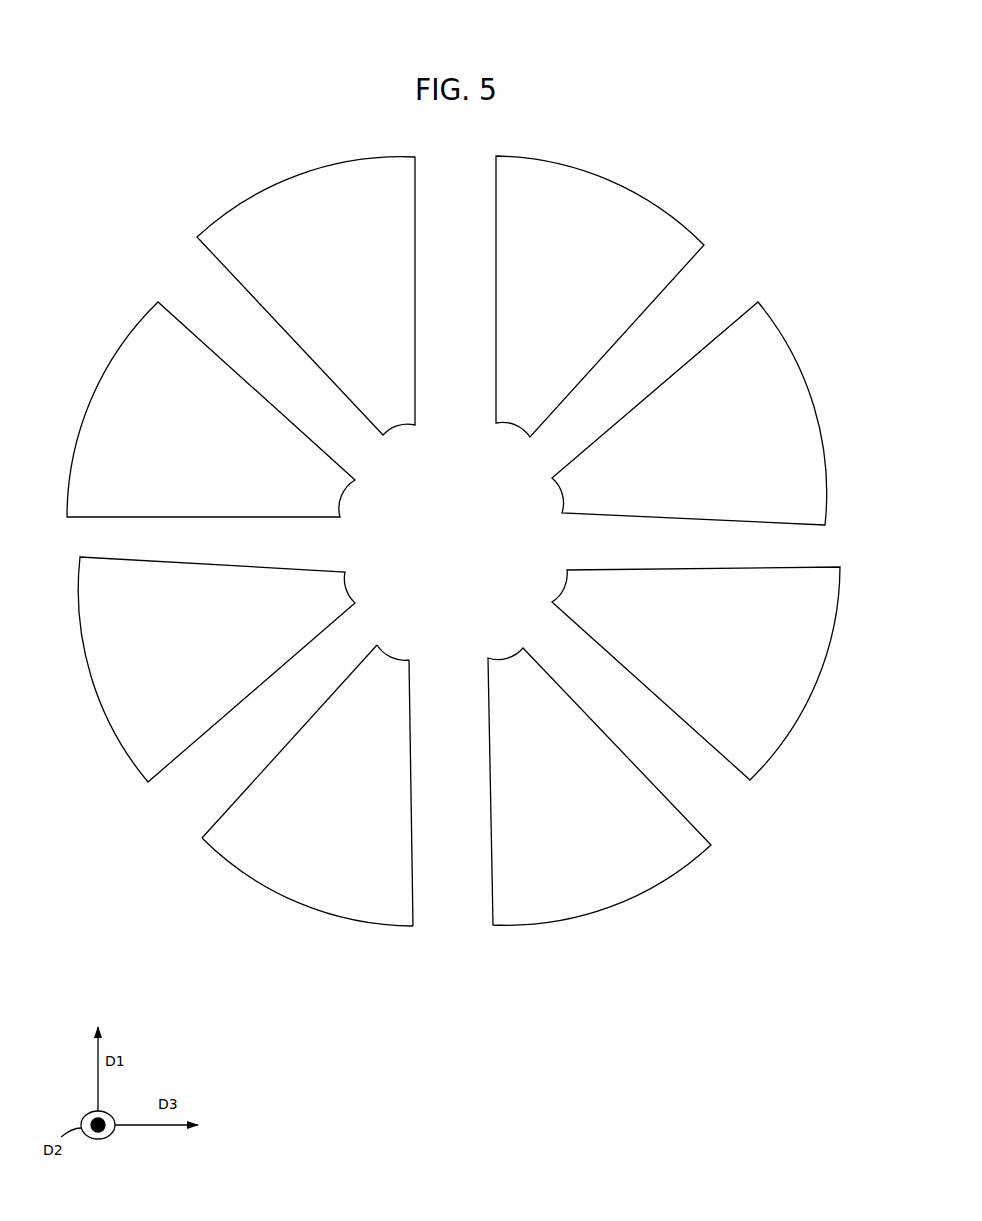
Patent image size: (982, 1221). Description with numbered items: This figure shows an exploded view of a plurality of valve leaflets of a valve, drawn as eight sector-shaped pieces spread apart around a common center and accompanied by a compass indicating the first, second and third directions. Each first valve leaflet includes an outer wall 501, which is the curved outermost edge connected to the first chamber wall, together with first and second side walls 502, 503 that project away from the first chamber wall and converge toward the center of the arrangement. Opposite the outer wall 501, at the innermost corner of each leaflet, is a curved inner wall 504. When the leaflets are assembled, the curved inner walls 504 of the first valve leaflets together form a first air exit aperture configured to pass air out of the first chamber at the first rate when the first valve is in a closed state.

The outer wall 501 is at (285, 907).
The first side wall 502 is at (233, 795).
The second side wall 503 is at (415, 882).
The curved inner wall 504 is at (393, 647).